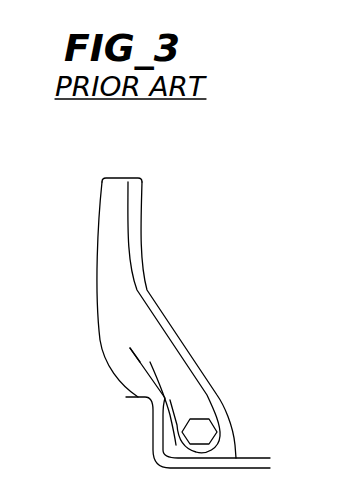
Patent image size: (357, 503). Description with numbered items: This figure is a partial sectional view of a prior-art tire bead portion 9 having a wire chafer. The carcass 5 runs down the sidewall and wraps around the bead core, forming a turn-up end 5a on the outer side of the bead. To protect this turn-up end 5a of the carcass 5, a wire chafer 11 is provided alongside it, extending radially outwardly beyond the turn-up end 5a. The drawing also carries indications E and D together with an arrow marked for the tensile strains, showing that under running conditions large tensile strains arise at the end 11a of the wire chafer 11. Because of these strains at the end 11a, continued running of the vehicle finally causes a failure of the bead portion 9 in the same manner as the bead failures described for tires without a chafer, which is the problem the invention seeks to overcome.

The tire bead portion 9 is at (189, 290).
The carcass 5 is at (207, 389).
The turn-up end 5a is at (168, 388).
The wire chafer 11 is at (146, 368).
The end of the wire chafer 11a is at (130, 350).
The direction of sidewall tension E is at (129, 281).
The distance / angle indication D is at (113, 283).